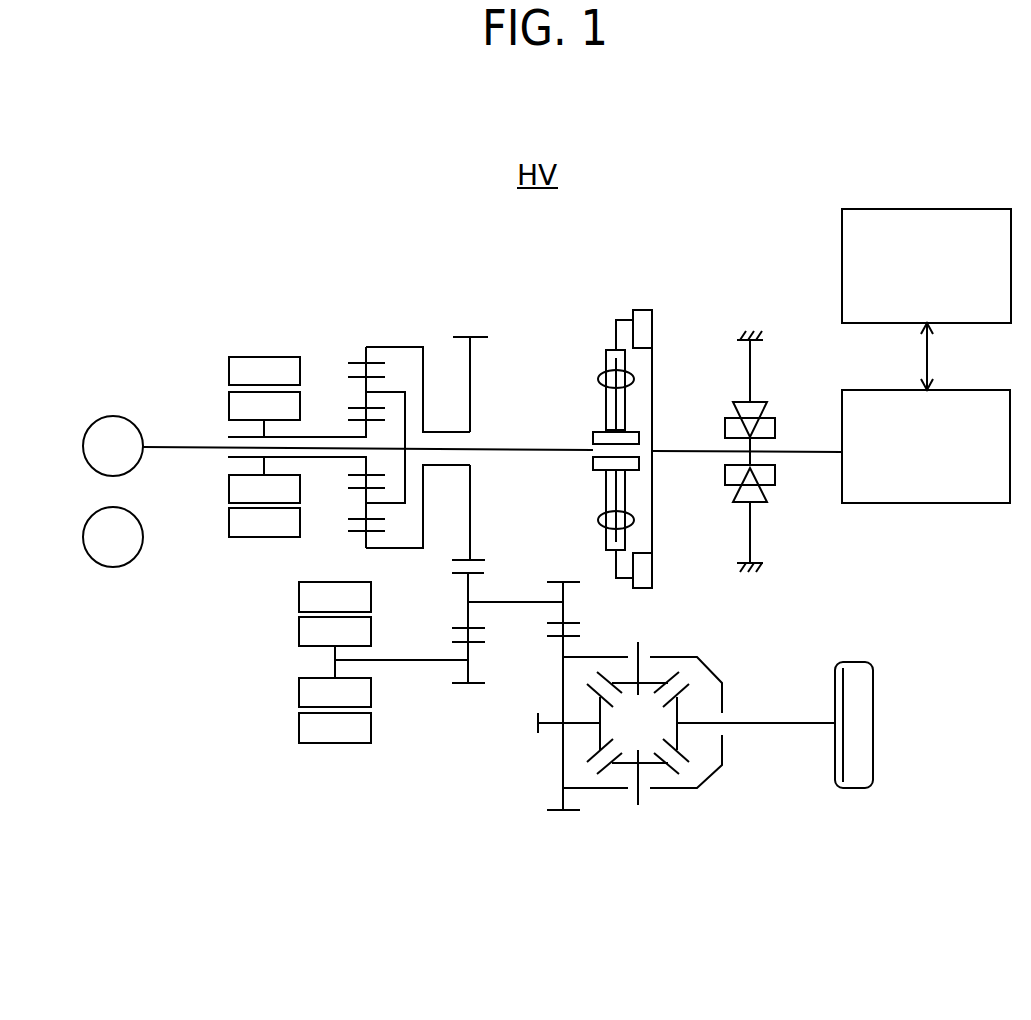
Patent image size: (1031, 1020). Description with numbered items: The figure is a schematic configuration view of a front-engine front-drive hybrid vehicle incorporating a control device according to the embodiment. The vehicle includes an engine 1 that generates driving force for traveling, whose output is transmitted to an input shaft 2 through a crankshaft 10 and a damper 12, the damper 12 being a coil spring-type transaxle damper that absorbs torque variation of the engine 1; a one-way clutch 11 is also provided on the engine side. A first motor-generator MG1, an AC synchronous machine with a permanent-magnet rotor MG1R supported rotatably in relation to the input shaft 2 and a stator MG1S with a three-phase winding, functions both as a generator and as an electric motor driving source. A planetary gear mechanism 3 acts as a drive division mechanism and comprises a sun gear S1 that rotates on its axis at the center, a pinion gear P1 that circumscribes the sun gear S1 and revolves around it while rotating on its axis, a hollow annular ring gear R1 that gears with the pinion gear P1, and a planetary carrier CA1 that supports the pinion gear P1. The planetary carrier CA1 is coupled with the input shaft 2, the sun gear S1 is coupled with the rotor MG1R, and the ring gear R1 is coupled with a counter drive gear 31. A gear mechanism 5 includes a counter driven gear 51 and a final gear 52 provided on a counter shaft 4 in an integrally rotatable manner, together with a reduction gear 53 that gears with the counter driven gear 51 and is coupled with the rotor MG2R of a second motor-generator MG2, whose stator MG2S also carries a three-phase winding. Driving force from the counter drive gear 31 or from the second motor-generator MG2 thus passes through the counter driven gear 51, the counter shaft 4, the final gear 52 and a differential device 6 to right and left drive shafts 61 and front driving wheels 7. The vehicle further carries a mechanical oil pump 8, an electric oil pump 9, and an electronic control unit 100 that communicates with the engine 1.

The engine 1 is at (965, 505).
The input shaft 2 is at (548, 448).
The planetary gear mechanism 3 is at (346, 410).
The counter shaft 4 is at (528, 600).
The gear mechanism 5 is at (543, 643).
The differential device 6 is at (678, 802).
The driving wheels 7 is at (873, 700).
The mechanical oil pump 8 is at (97, 420).
The electric oil pump 9 is at (90, 562).
The crankshaft 10 is at (803, 458).
The one-way clutch 11 is at (780, 393).
The damper 12 is at (665, 328).
The counter drive gear 31 is at (482, 560).
The counter driven gear 51 is at (487, 569).
The final gear 52 is at (580, 628).
The reduction gear 53 is at (460, 642).
The drive shafts 61 is at (553, 723).
The electronic control unit 100 is at (948, 208).
The first motor-generator MG1 is at (232, 392).
The stator MG1S is at (229, 370).
The rotor MG1R is at (229, 403).
The second motor-generator MG2 is at (314, 710).
The stator MG2S is at (299, 725).
The rotor MG2R is at (299, 693).
The sun gear S1 is at (348, 420).
The planetary carrier CA1 is at (395, 390).
The pinion gear P1 is at (350, 520).
The ring gear R1 is at (353, 533).